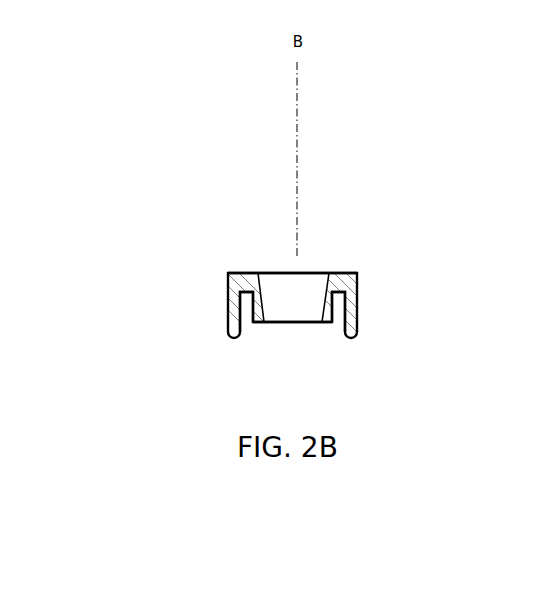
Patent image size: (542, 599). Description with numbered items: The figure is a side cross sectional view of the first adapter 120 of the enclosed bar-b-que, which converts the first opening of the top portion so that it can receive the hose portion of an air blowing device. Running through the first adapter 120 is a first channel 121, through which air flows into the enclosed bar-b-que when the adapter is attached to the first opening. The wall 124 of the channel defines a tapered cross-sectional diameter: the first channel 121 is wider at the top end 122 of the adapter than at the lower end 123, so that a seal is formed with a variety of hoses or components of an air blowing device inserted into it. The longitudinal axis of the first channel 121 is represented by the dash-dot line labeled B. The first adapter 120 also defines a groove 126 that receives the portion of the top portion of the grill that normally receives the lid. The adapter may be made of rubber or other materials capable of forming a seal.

The first adapter 120 is at (358, 312).
The first channel 121 is at (300, 291).
The top end 122 is at (355, 270).
The lower end 123 is at (262, 324).
The wall 124 is at (256, 306).
The groove 126 is at (340, 313).